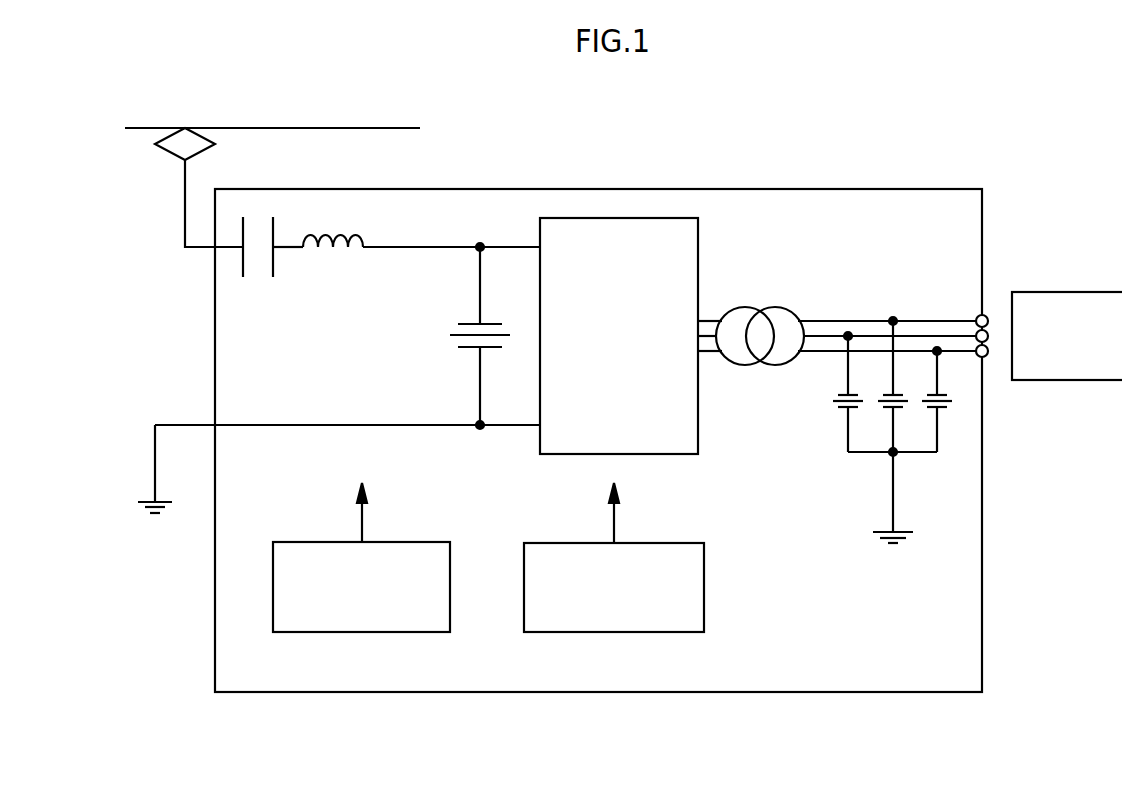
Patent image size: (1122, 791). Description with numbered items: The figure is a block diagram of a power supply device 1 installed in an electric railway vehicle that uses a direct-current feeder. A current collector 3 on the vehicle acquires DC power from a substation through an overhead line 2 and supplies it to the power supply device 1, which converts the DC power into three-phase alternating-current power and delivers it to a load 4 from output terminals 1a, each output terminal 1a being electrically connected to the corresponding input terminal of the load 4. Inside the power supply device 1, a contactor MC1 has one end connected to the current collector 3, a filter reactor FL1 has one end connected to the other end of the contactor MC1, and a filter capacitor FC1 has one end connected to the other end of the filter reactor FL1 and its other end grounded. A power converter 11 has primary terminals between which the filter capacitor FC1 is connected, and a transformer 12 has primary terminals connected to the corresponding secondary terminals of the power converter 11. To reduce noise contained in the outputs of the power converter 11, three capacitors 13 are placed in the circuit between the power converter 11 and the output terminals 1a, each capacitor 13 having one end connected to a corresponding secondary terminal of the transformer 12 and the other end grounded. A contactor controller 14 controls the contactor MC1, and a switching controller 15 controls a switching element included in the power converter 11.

The power supply device 1 is at (760, 189).
The output terminals 1a is at (988, 316).
The overhead line 2 is at (390, 128).
The current collector 3 is at (197, 151).
The load 4 is at (1034, 292).
The power converter 11 is at (540, 444).
The transformer 12 is at (755, 308).
The capacitors 13 is at (843, 410).
The contactor controller 14 is at (273, 593).
The switching controller 15 is at (524, 592).
The contactor MC1 is at (273, 270).
The filter reactor FL1 is at (365, 241).
The filter capacitor FC1 is at (492, 322).